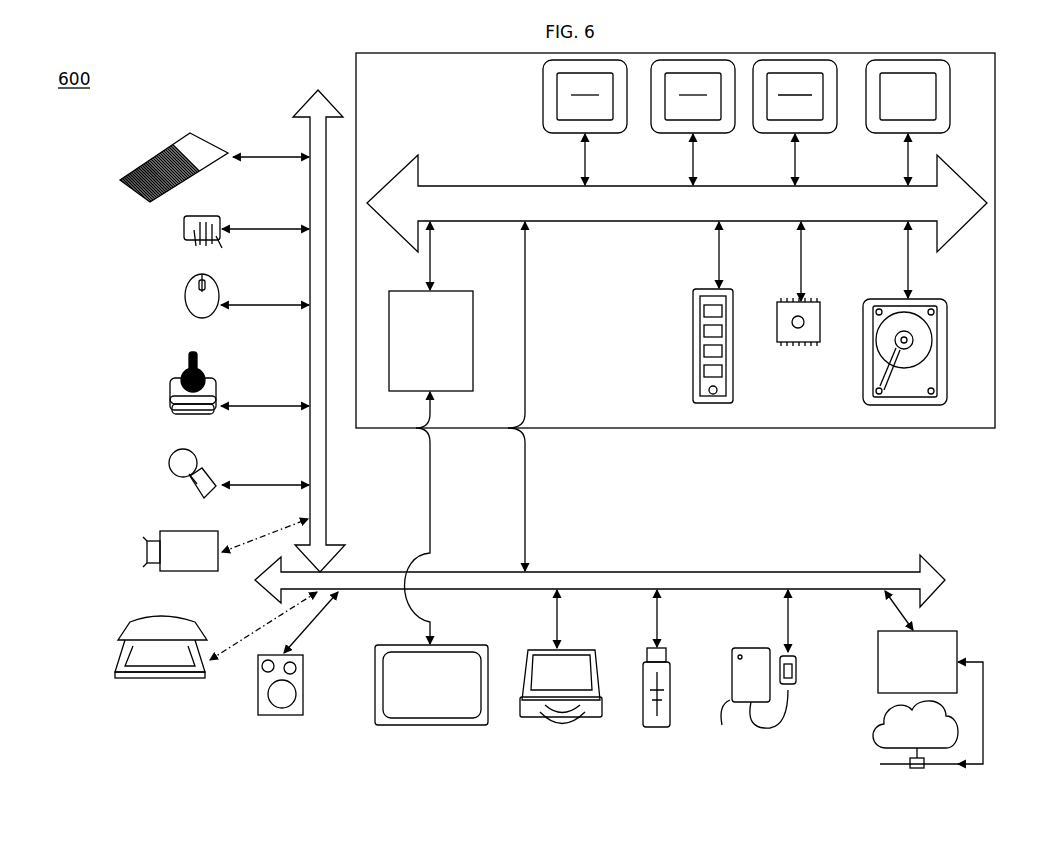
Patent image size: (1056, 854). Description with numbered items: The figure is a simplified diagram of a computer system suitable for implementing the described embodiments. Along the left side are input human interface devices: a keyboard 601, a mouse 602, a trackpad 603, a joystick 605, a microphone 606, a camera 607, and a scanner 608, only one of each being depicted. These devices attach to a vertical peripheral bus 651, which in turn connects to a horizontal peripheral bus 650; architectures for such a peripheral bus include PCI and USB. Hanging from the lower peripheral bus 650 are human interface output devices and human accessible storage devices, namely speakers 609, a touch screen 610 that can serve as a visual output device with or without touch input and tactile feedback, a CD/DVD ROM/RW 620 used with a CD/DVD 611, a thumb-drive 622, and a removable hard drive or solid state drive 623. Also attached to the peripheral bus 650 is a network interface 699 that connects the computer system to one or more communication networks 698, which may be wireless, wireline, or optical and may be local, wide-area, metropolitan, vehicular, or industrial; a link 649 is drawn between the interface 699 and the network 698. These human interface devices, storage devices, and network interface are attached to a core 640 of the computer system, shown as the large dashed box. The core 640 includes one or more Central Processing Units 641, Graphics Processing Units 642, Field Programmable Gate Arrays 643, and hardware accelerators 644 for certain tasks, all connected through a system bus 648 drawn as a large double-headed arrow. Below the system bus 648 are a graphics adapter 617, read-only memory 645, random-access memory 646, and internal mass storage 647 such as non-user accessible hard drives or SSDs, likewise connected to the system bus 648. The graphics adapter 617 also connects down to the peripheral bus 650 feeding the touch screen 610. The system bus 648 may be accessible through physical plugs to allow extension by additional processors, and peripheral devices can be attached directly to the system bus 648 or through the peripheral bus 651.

The keyboard 601 is at (120, 182).
The mouse 602 is at (182, 296).
The trackpad 603 is at (178, 236).
The joystick 605 is at (170, 400).
The microphone 606 is at (168, 466).
The camera 607 is at (150, 546).
The scanner 608 is at (115, 670).
The speakers 609 is at (284, 712).
The touch screen 610 is at (432, 726).
The CD/DVD 611 is at (568, 681).
The graphics adapter 617 is at (475, 371).
The CD/DVD ROM/RW 620 is at (588, 718).
The thumb-drive 622 is at (652, 728).
The removable hard drive or solid state drive 623 is at (758, 674).
The core 640 is at (668, 436).
The Central Processing Unit (CPU) 641 is at (548, 136).
The Graphics Processing Unit (GPU) 642 is at (656, 136).
The Field Programmable Gate Array (FPGA) 643 is at (760, 136).
The hardware accelerator 644 is at (870, 136).
The read-only memory (ROM) 645 is at (790, 345).
The random-access memory 646 is at (693, 350).
The internal mass storage 647 is at (872, 300).
The system bus 648 is at (655, 224).
The network connection 649 is at (984, 674).
The peripheral bus 650 is at (790, 572).
The peripheral bus 651 is at (300, 120).
The communication network 698 is at (880, 745).
The network interface 699 is at (877, 635).